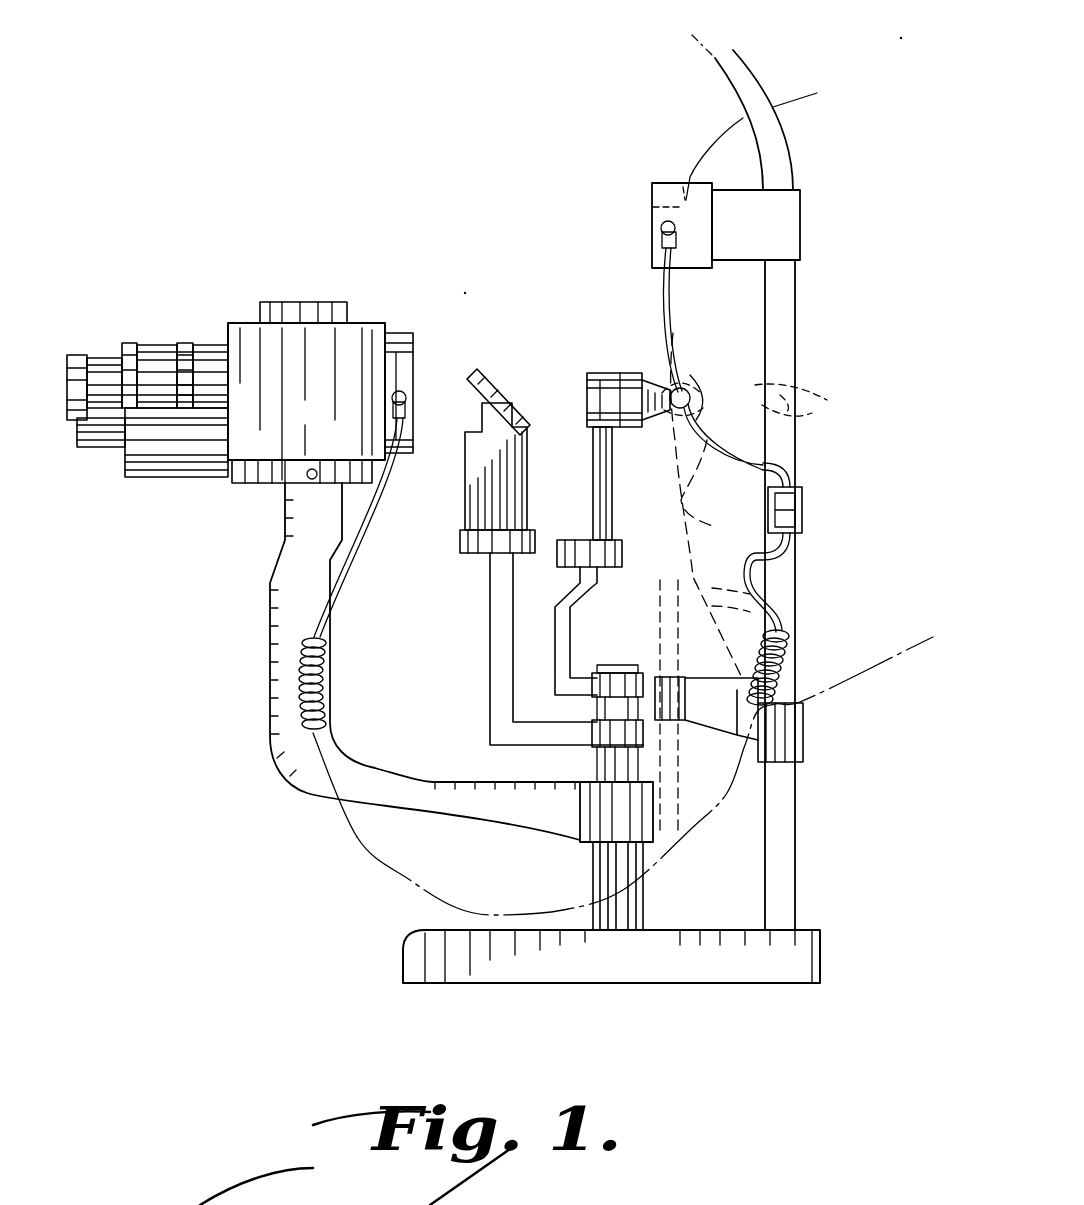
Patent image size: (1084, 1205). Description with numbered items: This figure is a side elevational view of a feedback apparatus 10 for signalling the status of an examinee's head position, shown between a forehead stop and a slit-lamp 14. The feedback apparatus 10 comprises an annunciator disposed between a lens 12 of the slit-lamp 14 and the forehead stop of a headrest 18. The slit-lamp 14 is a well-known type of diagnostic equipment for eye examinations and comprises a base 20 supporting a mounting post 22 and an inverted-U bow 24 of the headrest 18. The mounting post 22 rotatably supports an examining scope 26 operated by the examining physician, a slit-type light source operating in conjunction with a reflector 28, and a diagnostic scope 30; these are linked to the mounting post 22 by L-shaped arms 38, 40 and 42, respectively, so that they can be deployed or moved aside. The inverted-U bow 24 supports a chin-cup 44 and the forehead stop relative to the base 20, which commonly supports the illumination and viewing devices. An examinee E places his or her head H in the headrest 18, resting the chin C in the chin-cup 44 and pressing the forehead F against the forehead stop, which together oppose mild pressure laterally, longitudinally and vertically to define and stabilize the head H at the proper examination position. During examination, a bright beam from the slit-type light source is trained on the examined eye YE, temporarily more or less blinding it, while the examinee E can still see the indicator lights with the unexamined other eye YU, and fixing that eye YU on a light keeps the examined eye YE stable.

The feedback apparatus 10 is at (636, 242).
The lens 12 is at (418, 434).
The slit-lamp 14 is at (243, 748).
The headrest 18 is at (806, 845).
The base 20 is at (405, 958).
The mounting post 22 is at (640, 905).
The inverted-U bow 24 is at (735, 55).
The examining scope 26 is at (303, 312).
The reflector 28 is at (487, 386).
The diagnostic scope 30 is at (623, 449).
The L-shaped arm 38 is at (300, 780).
The L-shaped arm 40 is at (490, 652).
The L-shaped arm 42 is at (563, 640).
The chin-cup 44 is at (714, 715).
The chin C is at (820, 690).
The examinee E is at (818, 84).
The forehead F is at (737, 160).
The head H is at (890, 493).
The examined eye YE is at (692, 378).
The unexamined eye YU is at (807, 393).